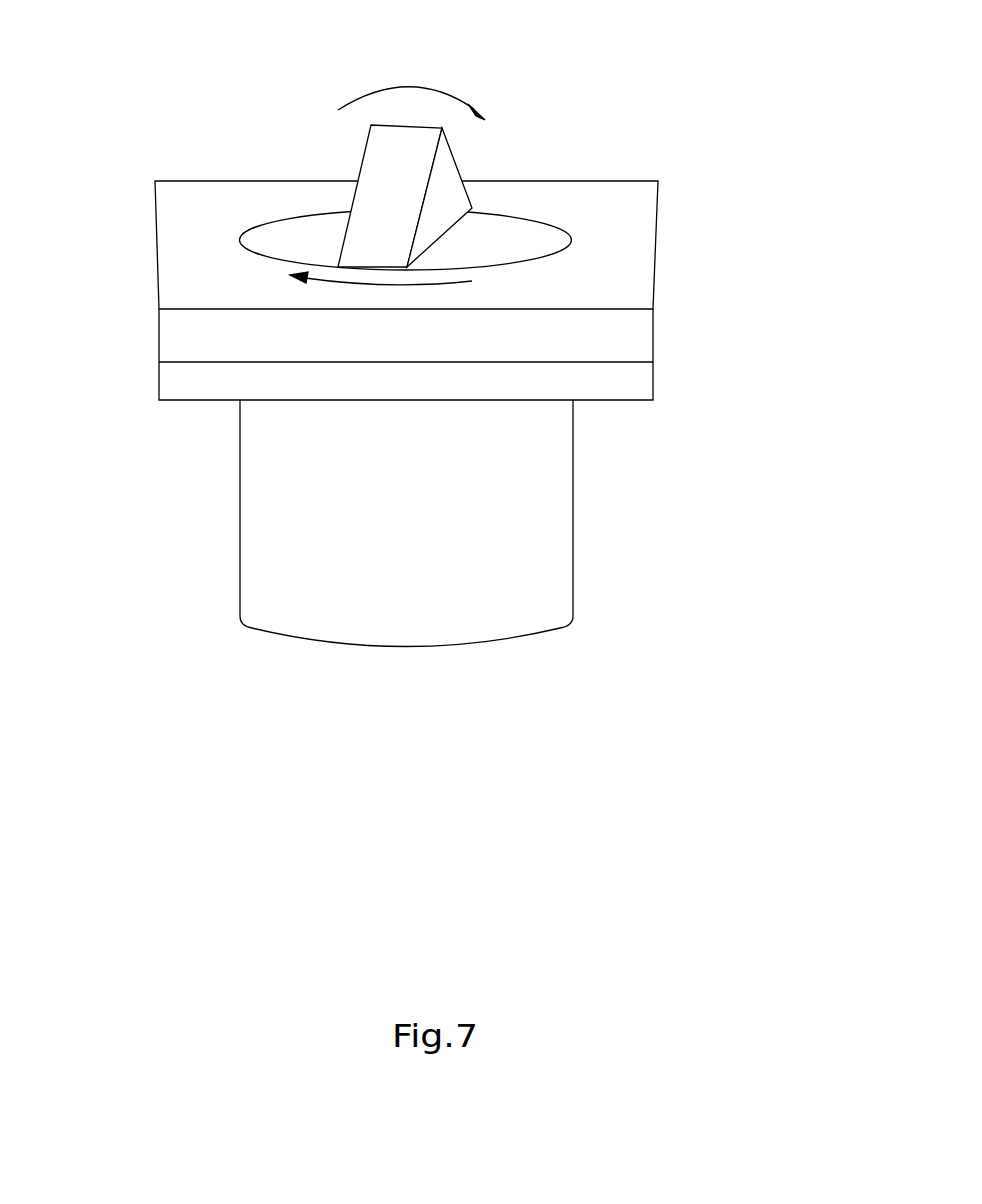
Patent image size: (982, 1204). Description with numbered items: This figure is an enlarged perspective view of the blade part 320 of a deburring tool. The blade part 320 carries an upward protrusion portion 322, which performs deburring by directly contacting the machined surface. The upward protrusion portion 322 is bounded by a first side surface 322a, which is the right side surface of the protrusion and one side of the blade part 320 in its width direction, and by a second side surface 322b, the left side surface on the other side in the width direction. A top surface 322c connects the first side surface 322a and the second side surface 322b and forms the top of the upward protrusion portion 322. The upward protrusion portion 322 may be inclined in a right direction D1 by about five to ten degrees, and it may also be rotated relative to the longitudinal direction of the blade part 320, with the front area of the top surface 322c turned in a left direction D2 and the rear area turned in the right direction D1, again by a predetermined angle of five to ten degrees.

The blade part 320 is at (128, 44).
The upward protrusion portion 322 is at (773, 120).
The first side surface 322a is at (442, 198).
The second side surface 322b is at (335, 230).
The top surface 322c is at (385, 177).
The right direction D1 is at (411, 85).
The left direction D2 is at (381, 291).